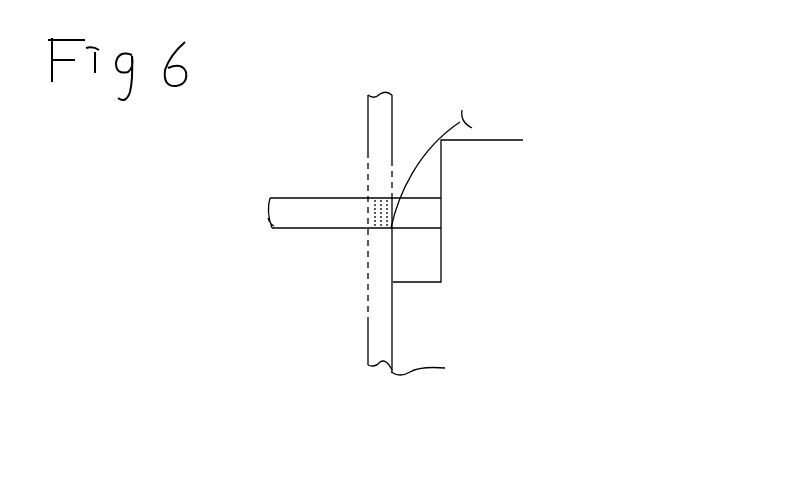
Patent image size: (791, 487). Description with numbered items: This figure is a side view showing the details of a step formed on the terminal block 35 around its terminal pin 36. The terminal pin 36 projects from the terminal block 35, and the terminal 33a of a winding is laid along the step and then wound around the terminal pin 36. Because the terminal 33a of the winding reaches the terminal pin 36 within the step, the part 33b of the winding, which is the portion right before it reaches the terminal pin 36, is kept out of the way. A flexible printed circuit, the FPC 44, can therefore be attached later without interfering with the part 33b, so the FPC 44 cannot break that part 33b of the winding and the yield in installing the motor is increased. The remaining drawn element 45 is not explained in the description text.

The FPC 44 is at (380, 113).
The terminal pin 36 is at (290, 222).
The bracket 45 is at (423, 267).
The terminal of winding 33a is at (365, 230).
The part of winding right before reaching terminal pin 33b is at (417, 157).
The terminal block 35 is at (413, 362).